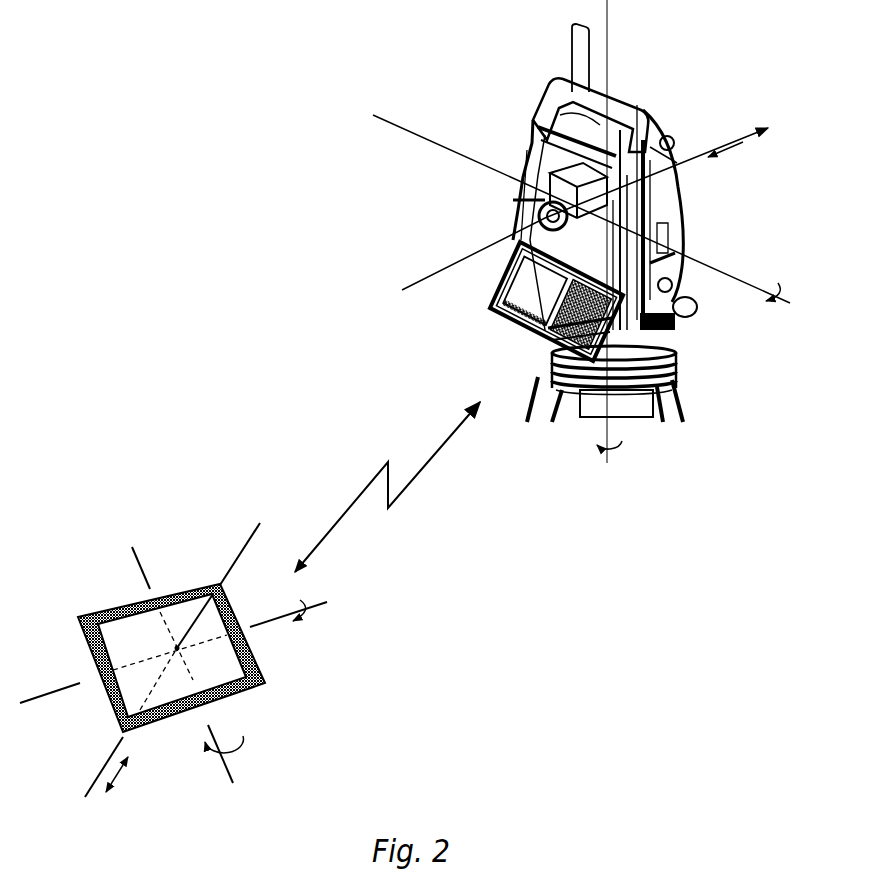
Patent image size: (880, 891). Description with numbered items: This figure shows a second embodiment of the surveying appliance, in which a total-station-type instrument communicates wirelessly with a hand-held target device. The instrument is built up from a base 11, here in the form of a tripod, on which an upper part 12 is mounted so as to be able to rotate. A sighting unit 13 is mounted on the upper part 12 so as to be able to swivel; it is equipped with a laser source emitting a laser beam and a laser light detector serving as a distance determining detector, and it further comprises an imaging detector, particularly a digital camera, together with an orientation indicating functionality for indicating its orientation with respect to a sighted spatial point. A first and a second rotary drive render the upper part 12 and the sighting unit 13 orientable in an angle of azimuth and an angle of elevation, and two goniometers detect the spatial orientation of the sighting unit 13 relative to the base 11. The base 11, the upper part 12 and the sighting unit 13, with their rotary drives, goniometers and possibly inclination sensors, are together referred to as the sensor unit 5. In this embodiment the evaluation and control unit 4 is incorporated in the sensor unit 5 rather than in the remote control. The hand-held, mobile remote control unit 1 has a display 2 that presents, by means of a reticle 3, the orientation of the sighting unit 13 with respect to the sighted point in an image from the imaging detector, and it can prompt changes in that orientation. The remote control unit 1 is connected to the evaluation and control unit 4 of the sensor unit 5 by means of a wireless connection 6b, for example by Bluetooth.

The remote control unit 1 is at (185, 613).
The display 2 is at (214, 658).
The reticle 3 is at (117, 612).
The evaluation and control unit 4 is at (528, 301).
The sensor unit 5 is at (576, 244).
The wireless connection 6b is at (367, 487).
The base 11 is at (680, 392).
The upper part 12 is at (705, 232).
The sighting unit 13 is at (492, 196).